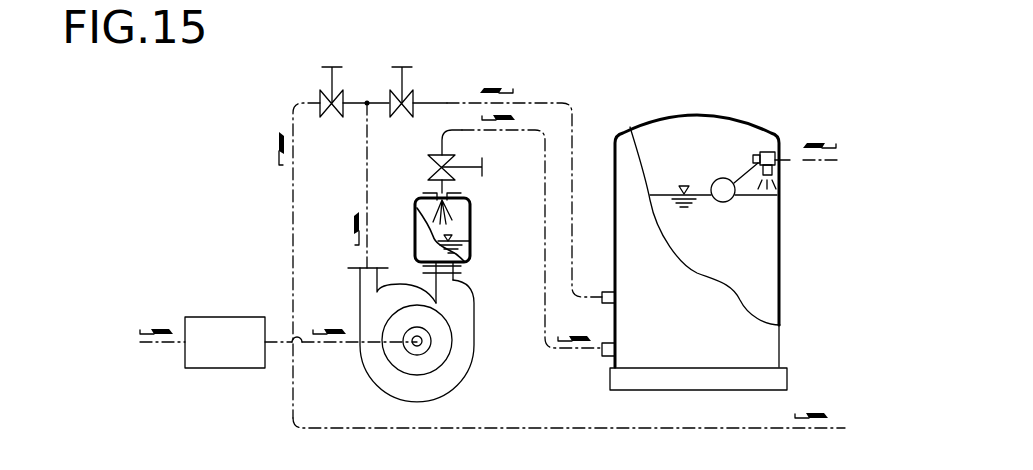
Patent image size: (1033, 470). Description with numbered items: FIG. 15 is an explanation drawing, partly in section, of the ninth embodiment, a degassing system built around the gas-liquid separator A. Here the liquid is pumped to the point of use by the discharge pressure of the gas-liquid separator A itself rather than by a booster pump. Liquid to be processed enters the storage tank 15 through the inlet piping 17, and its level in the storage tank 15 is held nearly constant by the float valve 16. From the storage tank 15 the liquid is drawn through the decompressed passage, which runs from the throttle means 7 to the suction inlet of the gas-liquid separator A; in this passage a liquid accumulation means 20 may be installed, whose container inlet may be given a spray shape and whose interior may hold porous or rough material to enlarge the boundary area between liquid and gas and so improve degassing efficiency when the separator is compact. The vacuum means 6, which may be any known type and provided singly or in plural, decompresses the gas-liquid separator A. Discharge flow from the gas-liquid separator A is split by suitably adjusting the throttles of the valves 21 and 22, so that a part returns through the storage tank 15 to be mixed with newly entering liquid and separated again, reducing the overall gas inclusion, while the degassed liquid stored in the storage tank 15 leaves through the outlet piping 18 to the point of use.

The vacuum means 6 is at (213, 317).
The throttle means 7 is at (463, 164).
The storage tank 15 is at (697, 113).
The float valve 16 is at (766, 152).
The inlet piping 17 is at (803, 160).
The outlet piping 18 is at (755, 428).
The liquid accumulation means 20 is at (472, 215).
The valve 21 is at (412, 79).
The valve 22 is at (345, 79).
The gas-liquid separator A is at (347, 302).